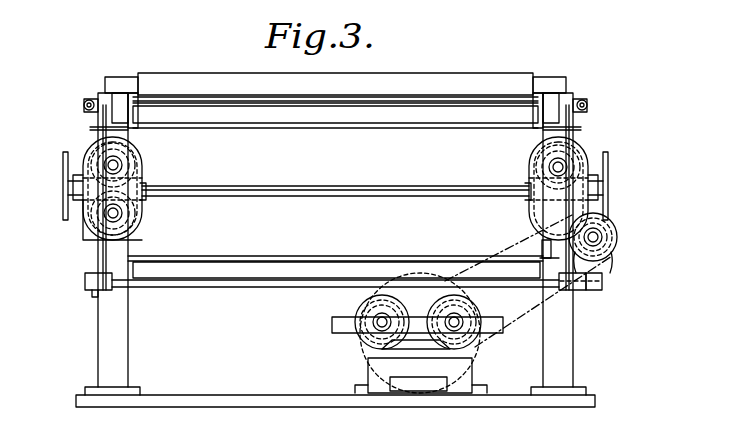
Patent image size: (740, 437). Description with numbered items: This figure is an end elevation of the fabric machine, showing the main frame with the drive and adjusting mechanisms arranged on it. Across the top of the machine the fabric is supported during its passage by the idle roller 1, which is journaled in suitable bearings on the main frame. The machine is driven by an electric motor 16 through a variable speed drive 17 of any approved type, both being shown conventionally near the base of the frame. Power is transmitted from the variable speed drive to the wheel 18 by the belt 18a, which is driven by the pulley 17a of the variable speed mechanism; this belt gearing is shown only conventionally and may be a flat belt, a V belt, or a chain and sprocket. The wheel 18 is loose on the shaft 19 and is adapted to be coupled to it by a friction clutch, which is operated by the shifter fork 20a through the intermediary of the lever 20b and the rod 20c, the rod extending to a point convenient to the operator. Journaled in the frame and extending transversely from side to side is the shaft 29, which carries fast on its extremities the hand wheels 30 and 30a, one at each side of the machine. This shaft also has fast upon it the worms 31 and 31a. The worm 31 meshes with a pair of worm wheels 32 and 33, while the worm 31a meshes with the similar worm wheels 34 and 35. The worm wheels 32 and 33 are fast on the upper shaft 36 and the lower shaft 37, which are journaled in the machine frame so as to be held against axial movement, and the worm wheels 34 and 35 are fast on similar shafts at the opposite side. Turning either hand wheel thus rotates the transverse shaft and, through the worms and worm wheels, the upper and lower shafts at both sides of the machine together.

The idle roller 1 is at (449, 76).
The motor 16 is at (362, 346).
The variable speed drive 17 is at (500, 326).
The pulley 17a is at (372, 316).
The wheel 18 is at (612, 228).
The belt 18a is at (497, 259).
The shaft 19 is at (600, 239).
The shifter fork 20a is at (602, 268).
The lever 20b is at (103, 248).
The rod 20c is at (84, 104).
The shaft 29 is at (360, 183).
The hand wheel 30 is at (606, 177).
The hand wheel 30a is at (66, 168).
The worm 31 is at (526, 199).
The worm 31a is at (148, 201).
The worm wheel 32 is at (530, 162).
The worm wheel 33 is at (546, 220).
The worm wheel 34 is at (143, 156).
The worm wheel 35 is at (139, 229).
The upper shaft 36 is at (110, 162).
The lower shaft 37 is at (109, 216).